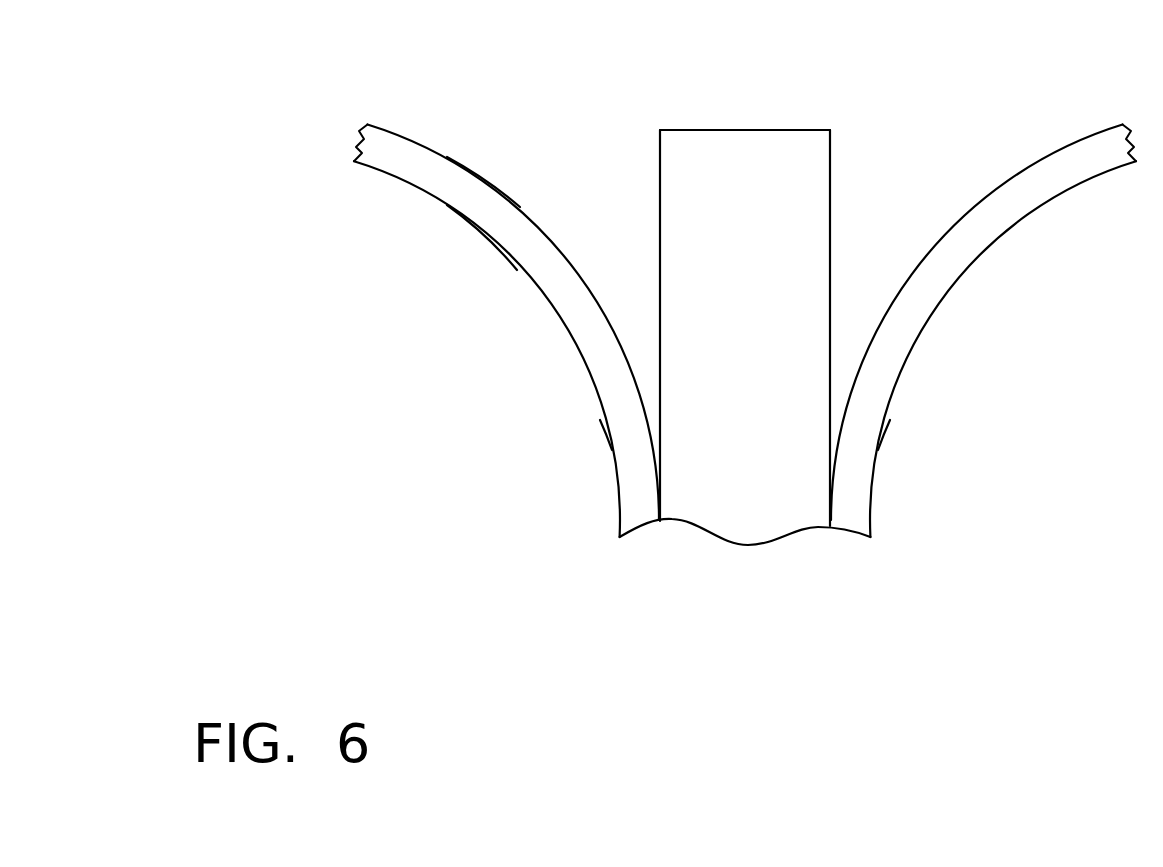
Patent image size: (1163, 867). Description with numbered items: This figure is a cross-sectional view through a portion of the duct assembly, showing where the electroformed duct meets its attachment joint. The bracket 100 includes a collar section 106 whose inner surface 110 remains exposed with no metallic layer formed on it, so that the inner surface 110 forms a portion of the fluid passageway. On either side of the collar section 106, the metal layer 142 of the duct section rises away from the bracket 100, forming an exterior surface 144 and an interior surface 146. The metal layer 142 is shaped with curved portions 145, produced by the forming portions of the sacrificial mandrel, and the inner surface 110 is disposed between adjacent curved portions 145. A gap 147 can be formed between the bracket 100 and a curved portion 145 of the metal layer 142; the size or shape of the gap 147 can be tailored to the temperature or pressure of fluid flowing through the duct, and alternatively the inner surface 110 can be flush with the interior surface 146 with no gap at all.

The bracket 100 is at (732, 502).
The collar section 106 is at (852, 140).
The inner surface 110 is at (733, 128).
The metal layer 142 is at (406, 112).
The exterior surface 144 is at (447, 205).
The curved portion 145 is at (613, 392).
The interior surface 146 is at (447, 157).
The gap 147 is at (638, 252).